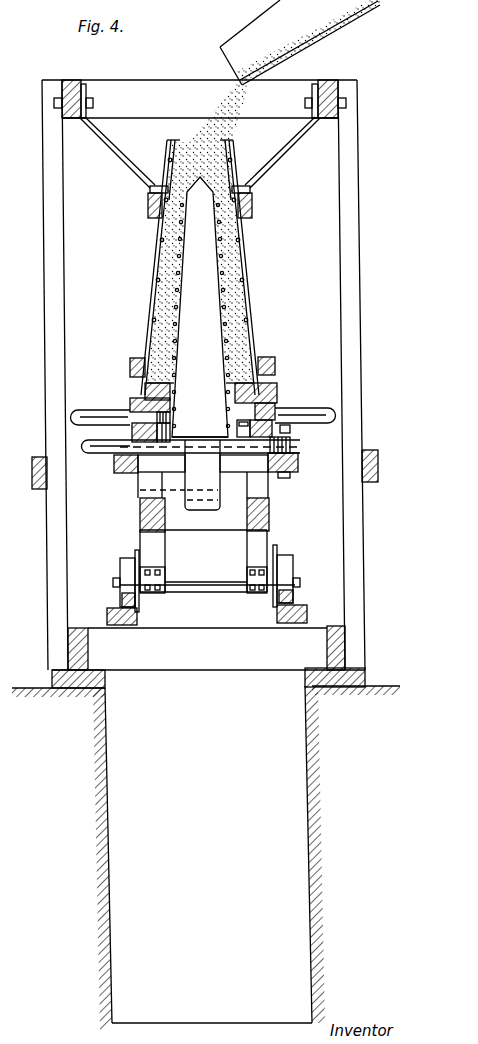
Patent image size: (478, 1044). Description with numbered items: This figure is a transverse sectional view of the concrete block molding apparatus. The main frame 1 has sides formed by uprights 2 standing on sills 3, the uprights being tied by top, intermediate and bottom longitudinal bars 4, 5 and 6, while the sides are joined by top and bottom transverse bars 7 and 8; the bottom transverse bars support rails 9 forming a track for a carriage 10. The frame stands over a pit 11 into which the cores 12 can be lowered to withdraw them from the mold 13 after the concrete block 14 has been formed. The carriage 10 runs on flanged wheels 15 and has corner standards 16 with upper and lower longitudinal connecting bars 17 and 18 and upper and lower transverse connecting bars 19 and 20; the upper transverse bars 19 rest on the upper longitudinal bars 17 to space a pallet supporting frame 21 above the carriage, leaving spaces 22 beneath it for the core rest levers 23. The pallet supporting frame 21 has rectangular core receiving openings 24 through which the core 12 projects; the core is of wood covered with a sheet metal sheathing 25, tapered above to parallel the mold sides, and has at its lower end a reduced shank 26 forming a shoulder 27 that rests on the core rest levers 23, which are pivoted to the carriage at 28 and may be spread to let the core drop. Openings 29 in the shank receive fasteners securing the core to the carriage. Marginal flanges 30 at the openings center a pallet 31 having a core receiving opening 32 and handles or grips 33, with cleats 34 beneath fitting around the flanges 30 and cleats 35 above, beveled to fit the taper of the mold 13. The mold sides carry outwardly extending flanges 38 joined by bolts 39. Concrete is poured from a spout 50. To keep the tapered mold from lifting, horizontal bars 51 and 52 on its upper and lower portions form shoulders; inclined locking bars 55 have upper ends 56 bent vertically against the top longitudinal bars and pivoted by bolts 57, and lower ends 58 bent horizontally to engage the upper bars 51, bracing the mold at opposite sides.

The main frame 1 is at (48, 80).
The uprights 2 is at (50, 305).
The sills 3 is at (105, 683).
The top longitudinal bar 4 is at (76, 118).
The intermediate longitudinal bar 5 is at (43, 490).
The bottom longitudinal bar 6 is at (88, 653).
The top transverse bar 7 is at (200, 107).
The bottom transverse bar 8 is at (208, 649).
The rails 9 is at (107, 615).
The carriage 10 is at (272, 518).
The pit 11 is at (209, 858).
The core 12 is at (200, 307).
The mold 13 is at (252, 287).
The molded concrete block 14 is at (240, 327).
The wheels 15 is at (128, 568).
The corner standards 16 is at (257, 548).
The upper longitudinal connecting bars 17 is at (138, 490).
The lower longitudinal connecting bars 18 is at (140, 522).
The upper transverse connecting bars 19 is at (161, 465).
The lower transverse connecting bars 20 is at (206, 504).
The pallet supporting frame 21 is at (112, 445).
The spaces 22 is at (244, 464).
The core rest levers 23 is at (291, 444).
The core receiving openings 24 is at (166, 435).
The sheathing 25 is at (214, 320).
The shank 26 is at (202, 475).
The shoulder 27 is at (223, 433).
The pivot 28 is at (289, 429).
The openings 29 is at (140, 490).
The marginal flanges 30 is at (276, 403).
The pallet 31 is at (288, 410).
The core receiving opening 32 is at (275, 381).
The handles or grips 33 is at (85, 417).
The cleats 34 is at (132, 420).
The cleats 35 is at (160, 387).
The flanges 38 is at (151, 277).
The bolts 39 is at (169, 160).
The spout 50 is at (349, 22).
The upper horizontal bars 51 is at (153, 215).
The lower horizontal bars 52 is at (130, 364).
The locking bars 55 is at (124, 160).
The upper ends 56 is at (83, 90).
The bolts 57 is at (91, 106).
The lower ends 58 is at (152, 188).